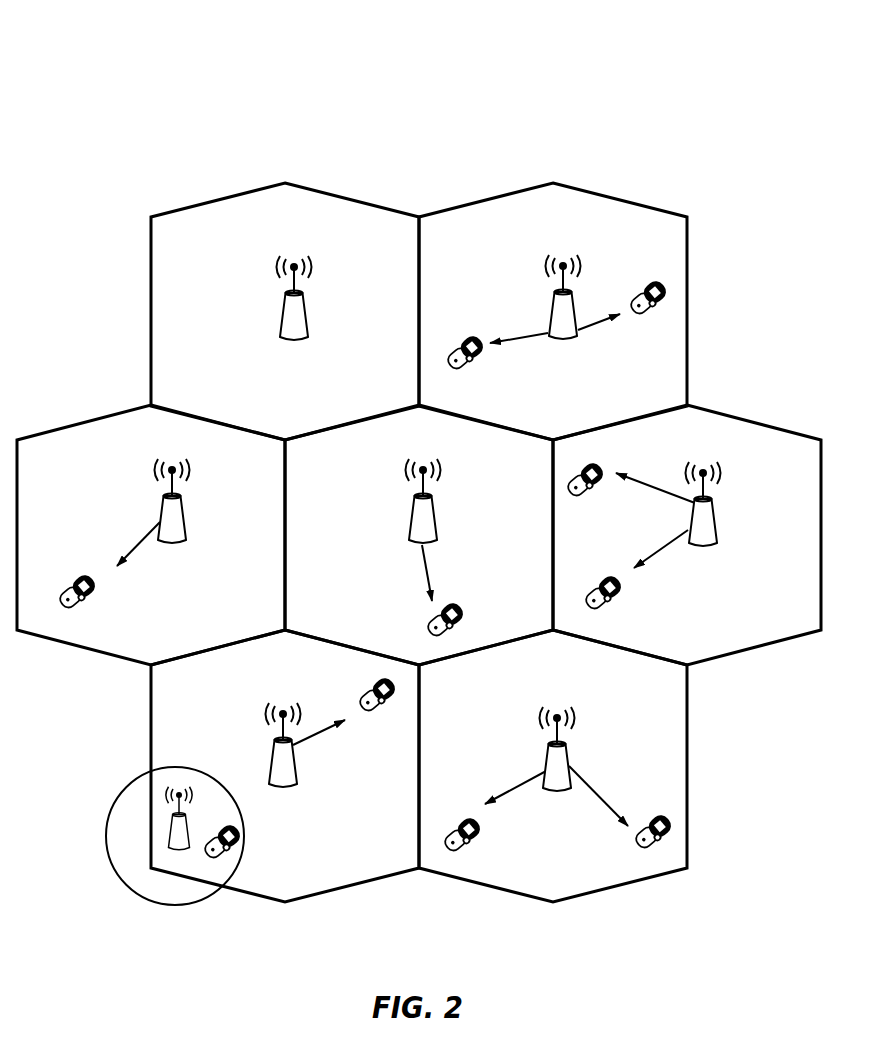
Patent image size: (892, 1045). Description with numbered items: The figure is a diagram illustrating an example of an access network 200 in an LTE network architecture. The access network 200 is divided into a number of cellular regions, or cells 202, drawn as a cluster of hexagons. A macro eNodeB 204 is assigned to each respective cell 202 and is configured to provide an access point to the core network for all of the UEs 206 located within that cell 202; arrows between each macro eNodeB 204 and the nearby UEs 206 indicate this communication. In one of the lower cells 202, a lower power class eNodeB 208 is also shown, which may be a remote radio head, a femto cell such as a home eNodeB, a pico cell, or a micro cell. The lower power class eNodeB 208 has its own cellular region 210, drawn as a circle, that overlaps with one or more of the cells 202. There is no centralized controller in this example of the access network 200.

The access network 200 is at (169, 40).
The cellular regions (cells) 202 is at (150, 248).
The macro eNodeB 204 is at (292, 263).
The UE 206 is at (478, 366).
The lower power class eNodeB 208 is at (176, 814).
The cellular region of lower power class eNodeB 210 is at (112, 870).